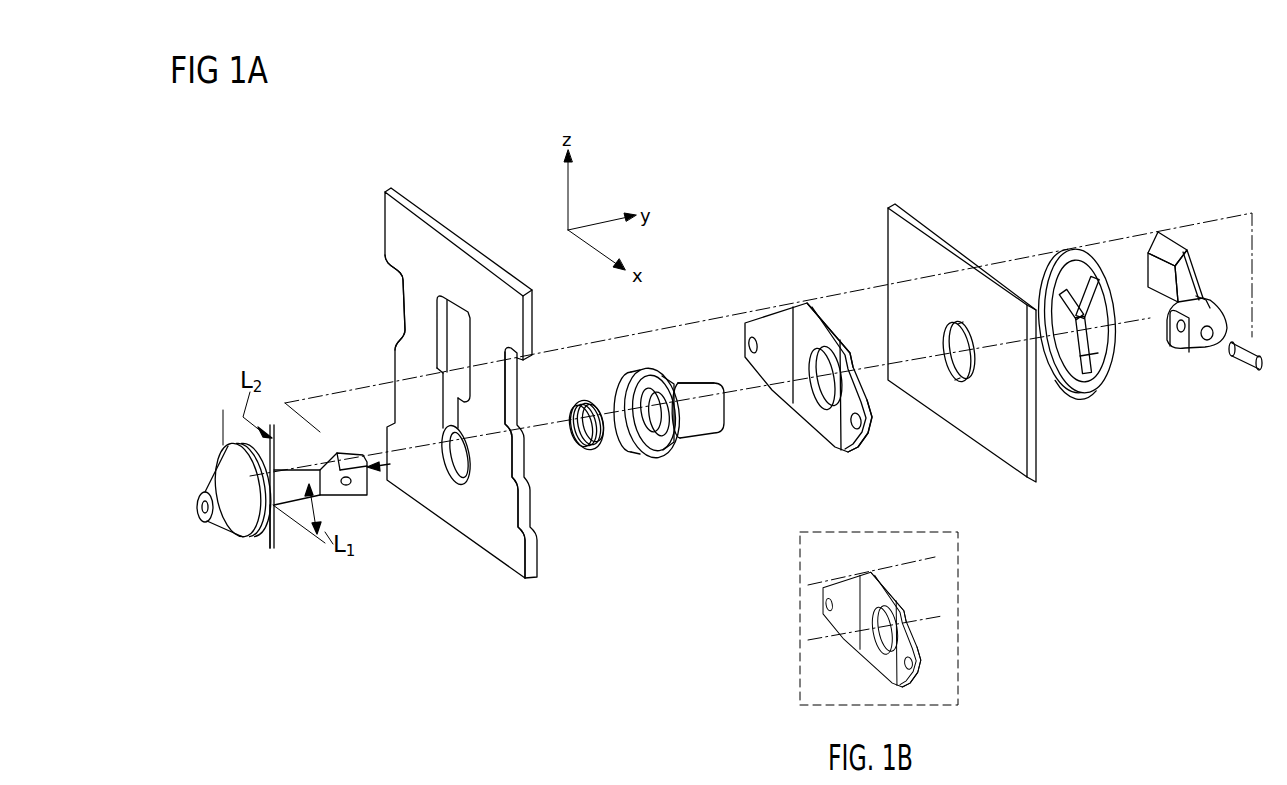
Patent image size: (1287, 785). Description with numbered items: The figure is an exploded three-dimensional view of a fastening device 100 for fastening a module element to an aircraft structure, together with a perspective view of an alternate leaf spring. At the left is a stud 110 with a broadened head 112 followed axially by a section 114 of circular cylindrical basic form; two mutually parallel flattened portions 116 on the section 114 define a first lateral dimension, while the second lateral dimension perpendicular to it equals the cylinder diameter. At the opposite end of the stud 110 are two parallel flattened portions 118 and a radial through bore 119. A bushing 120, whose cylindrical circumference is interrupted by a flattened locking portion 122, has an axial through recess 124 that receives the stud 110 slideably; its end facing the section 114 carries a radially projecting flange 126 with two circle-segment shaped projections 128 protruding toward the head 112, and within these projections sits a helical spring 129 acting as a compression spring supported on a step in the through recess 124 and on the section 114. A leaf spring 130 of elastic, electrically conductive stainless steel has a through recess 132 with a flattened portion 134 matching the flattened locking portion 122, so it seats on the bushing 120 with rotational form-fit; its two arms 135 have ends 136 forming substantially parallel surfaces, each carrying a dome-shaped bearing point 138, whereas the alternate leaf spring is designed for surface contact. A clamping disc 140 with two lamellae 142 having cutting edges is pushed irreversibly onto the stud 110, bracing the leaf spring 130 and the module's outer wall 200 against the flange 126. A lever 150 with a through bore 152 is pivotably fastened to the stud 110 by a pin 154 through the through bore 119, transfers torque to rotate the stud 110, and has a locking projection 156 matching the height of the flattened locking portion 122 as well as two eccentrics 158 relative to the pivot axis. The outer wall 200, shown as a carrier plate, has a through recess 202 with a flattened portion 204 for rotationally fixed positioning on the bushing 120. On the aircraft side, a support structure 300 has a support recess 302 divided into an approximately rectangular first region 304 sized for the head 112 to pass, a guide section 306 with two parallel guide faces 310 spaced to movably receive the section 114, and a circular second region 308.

In FIG. 1A, the fastening device 100 is at (300, 164).
In FIG. 1A, the stud 110 is at (308, 492).
In FIG. 1A, the broadened head 112 is at (217, 472).
In FIG. 1A, the section 114 is at (272, 540).
In FIG. 1A, the flattened portions 116 is at (276, 462).
In FIG. 1A, the flattened portions 118 is at (334, 472).
In FIG. 1A, the radial through bore 119 is at (367, 488).
In FIG. 1A, the bushing 120 is at (702, 432).
In FIG. 1A, the flattened locking portion 122 is at (690, 382).
In FIG. 1A, the axial through recess 124 is at (626, 386).
In FIG. 1A, the flange 126 is at (645, 448).
In FIG. 1A, the circle-segment shaped projections 128 is at (678, 452).
In FIG. 1A, the helical spring 129 is at (582, 451).
In FIG. 1A, the leaf spring 130 is at (806, 302).
In FIG. 1B, the leaf spring 130 is at (872, 609).
In FIG. 1A, the through recess 132 is at (814, 394).
In FIG. 1B, the through recess 132 is at (864, 637).
In FIG. 1A, the flattened portion 134 is at (843, 338).
In FIG. 1B, the flattened portion 134 is at (899, 595).
In FIG. 1A, the arms 135 is at (771, 322).
In FIG. 1B, the arms 135 is at (841, 596).
In FIG. 1A, the ends 136 is at (873, 436).
In FIG. 1B, the ends 136 is at (929, 677).
In FIG. 1A, the bearing point 138 is at (840, 434).
In FIG. 1B, the bearing point 138 is at (881, 678).
In FIG. 1A, the clamping disc 140 is at (1058, 270).
In FIG. 1A, the lamellae 142 is at (1072, 393).
In FIG. 1A, the lever 150 is at (1152, 234).
In FIG. 1A, the through bore 152 is at (1210, 352).
In FIG. 1A, the pin 154 is at (1248, 372).
In FIG. 1A, the locking projection 156 is at (1200, 290).
In FIG. 1A, the eccentrics 158 is at (1170, 350).
In FIG. 1A, the outer wall 200 is at (880, 229).
In FIG. 1A, the through recess 202 is at (962, 380).
In FIG. 1A, the flattened portion 204 is at (954, 322).
In FIG. 1A, the support structure 300 is at (452, 238).
In FIG. 1A, the support recess 302 is at (430, 305).
In FIG. 1A, the first region 304 is at (455, 340).
In FIG. 1A, the guide section 306 is at (445, 420).
In FIG. 1A, the second region 308 is at (447, 468).
In FIG. 1A, the guide faces 310 is at (505, 394).